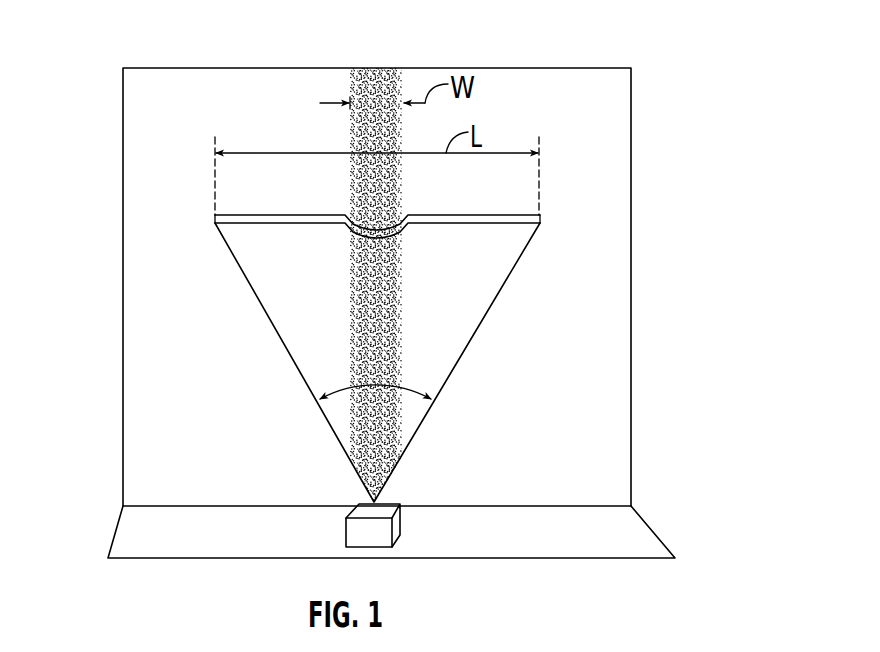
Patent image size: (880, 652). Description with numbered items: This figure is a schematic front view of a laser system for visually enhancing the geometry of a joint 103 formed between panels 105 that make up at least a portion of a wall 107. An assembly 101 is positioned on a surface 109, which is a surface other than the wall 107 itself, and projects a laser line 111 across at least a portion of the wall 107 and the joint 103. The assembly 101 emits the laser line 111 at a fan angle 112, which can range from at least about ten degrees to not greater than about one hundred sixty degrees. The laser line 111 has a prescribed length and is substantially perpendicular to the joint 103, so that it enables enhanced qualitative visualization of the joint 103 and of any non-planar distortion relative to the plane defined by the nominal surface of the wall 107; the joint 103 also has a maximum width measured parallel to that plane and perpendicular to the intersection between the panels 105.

The assembly 101 is at (410, 524).
The joint 103 is at (377, 77).
The panels 105 is at (133, 453).
The wall 107 is at (666, 52).
The surface 109 is at (643, 545).
The laser line 111 is at (468, 215).
The fan angle 112 is at (413, 392).